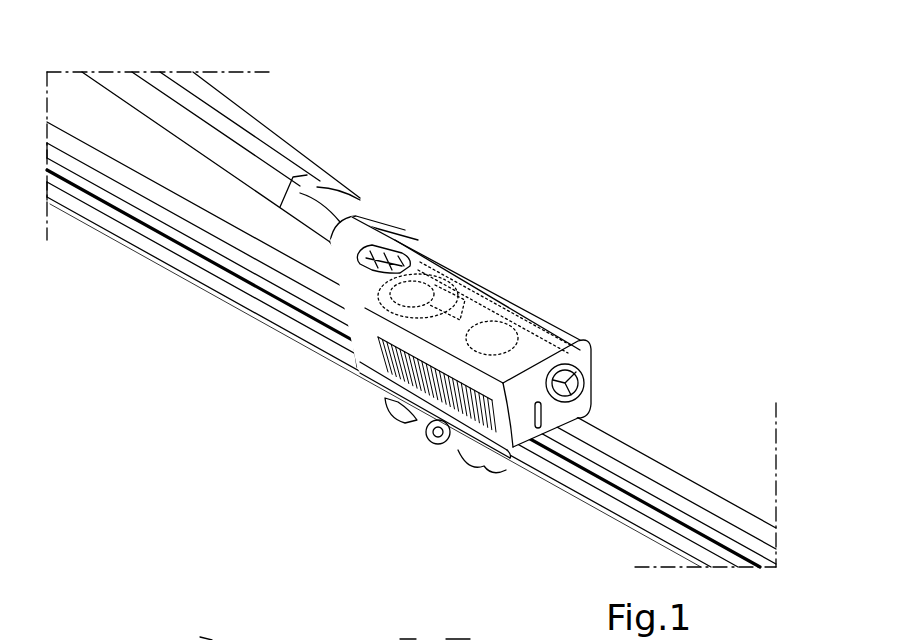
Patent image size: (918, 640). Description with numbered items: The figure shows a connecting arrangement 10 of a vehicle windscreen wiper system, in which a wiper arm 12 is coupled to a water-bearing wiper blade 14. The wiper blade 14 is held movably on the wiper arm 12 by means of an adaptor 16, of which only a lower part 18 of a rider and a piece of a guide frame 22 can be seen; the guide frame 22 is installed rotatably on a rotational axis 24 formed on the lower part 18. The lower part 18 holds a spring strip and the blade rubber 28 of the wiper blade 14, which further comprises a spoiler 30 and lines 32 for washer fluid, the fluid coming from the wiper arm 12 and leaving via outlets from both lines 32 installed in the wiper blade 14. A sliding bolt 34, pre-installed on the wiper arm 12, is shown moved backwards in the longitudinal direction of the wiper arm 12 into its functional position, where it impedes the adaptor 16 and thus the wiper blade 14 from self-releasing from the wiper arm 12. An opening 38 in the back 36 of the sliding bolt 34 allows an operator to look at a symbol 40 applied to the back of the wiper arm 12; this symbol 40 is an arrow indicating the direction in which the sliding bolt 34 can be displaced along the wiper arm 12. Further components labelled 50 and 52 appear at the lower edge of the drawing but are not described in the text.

The connecting arrangement 10 is at (411, 338).
The wiper arm 12 is at (302, 122).
The wiper blade 14 is at (411, 355).
The adaptor 16 is at (204, 639).
The lower part 18 is at (476, 468).
The guide frame 22 is at (400, 412).
The rotational axis 24 is at (435, 444).
The blade rubber 28 is at (572, 505).
The spoiler 30 is at (636, 463).
The lines 32 is at (217, 276).
The sliding bolt 34 is at (480, 347).
The back 36 is at (462, 302).
The opening 38 is at (383, 250).
The symbol 40 is at (400, 256).
The lower element 50 is at (407, 639).
The lower element 52 is at (459, 636).